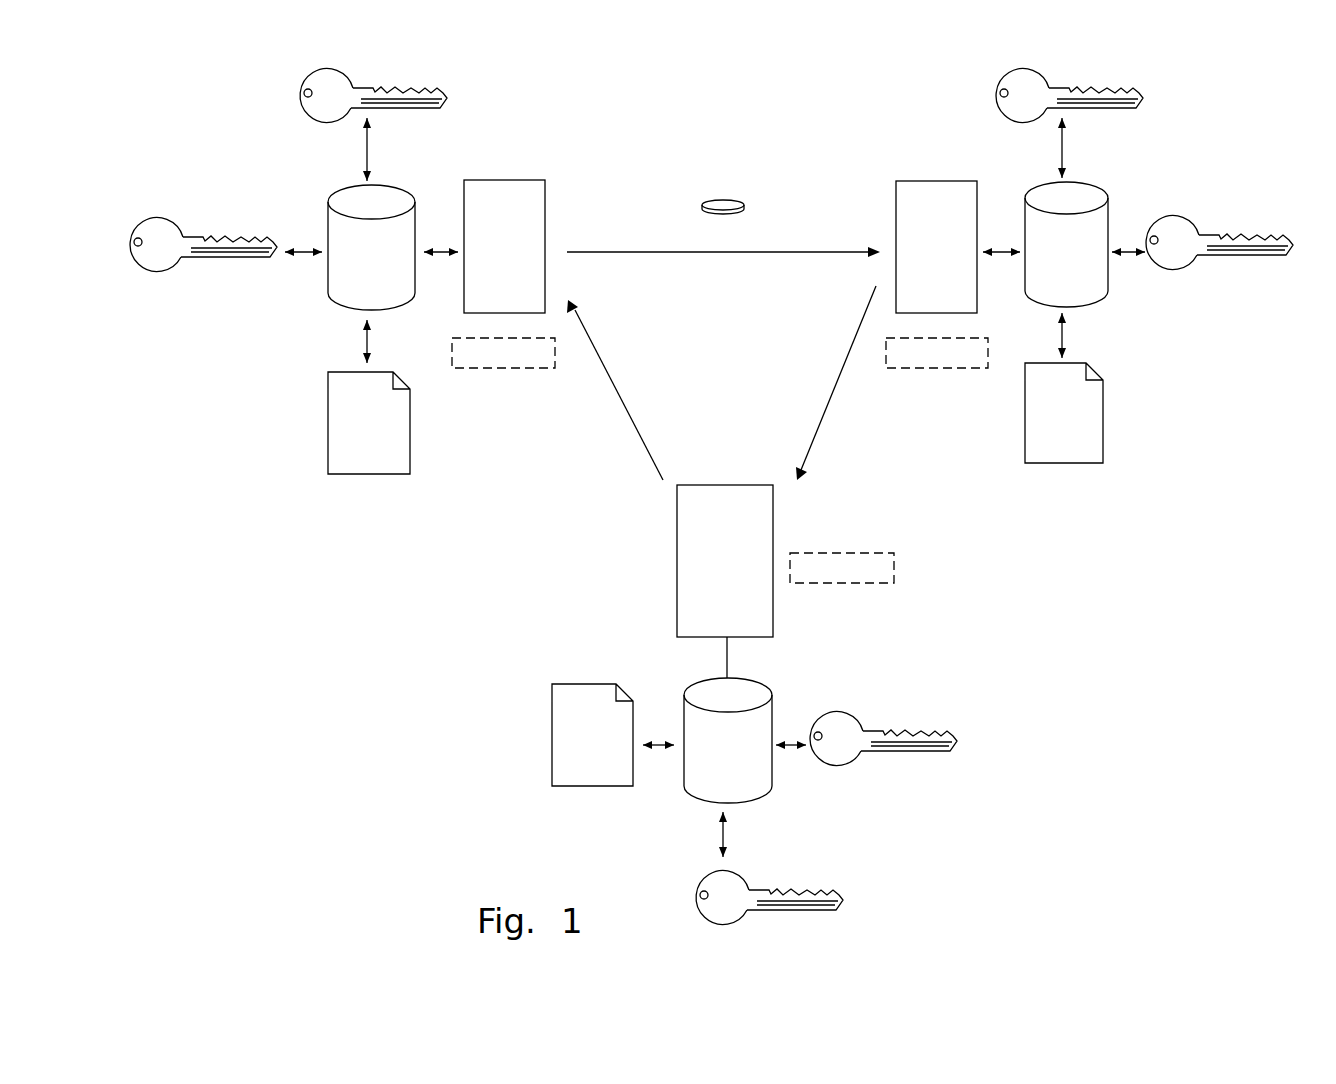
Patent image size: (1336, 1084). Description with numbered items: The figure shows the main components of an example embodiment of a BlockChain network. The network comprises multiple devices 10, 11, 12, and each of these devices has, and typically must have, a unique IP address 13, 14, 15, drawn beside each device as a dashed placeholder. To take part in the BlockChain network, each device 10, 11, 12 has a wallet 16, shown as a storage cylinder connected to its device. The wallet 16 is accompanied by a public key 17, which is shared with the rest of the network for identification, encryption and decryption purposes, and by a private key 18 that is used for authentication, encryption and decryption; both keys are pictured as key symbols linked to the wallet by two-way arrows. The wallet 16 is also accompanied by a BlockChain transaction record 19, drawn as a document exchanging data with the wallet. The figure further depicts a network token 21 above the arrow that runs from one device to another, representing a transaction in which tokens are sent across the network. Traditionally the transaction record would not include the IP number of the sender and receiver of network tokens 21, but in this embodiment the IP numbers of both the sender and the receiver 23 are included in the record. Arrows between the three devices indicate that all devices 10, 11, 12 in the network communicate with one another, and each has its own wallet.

The device 10 is at (517, 180).
The device 11 is at (910, 181).
The device 12 is at (748, 485).
The IP address 13 is at (528, 368).
The IP address 14 is at (950, 368).
The IP address 15 is at (894, 567).
The wallet 16 is at (328, 202).
The public key 17 is at (303, 90).
The private key 18 is at (150, 270).
The BlockChain transaction record 19 is at (379, 474).
The network token 21 is at (740, 200).
The receiver 23 is at (790, 252).